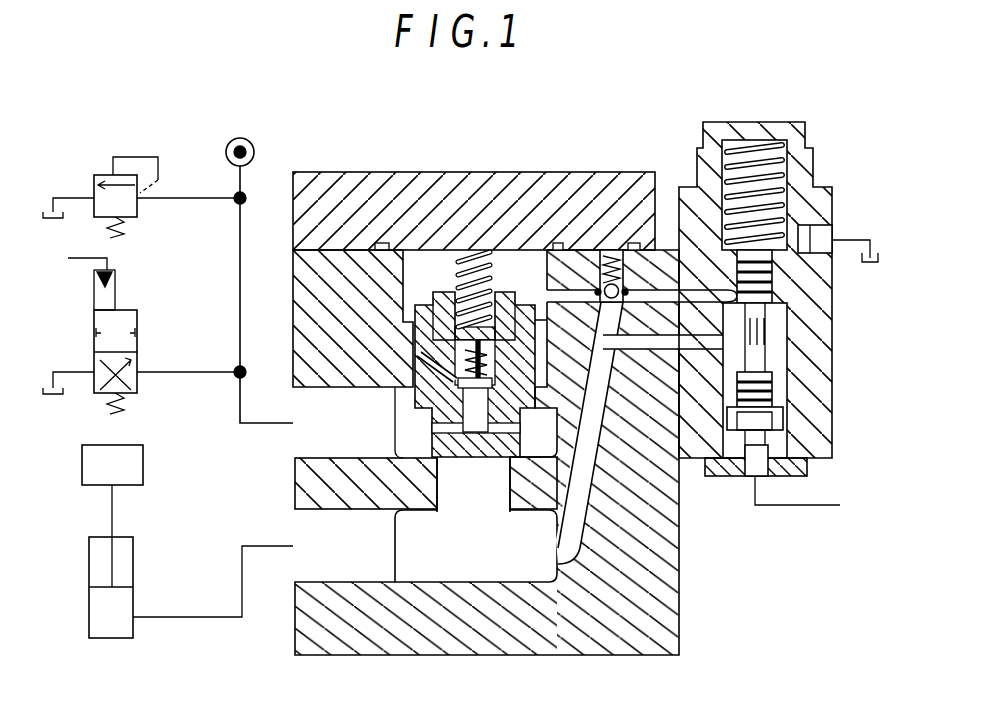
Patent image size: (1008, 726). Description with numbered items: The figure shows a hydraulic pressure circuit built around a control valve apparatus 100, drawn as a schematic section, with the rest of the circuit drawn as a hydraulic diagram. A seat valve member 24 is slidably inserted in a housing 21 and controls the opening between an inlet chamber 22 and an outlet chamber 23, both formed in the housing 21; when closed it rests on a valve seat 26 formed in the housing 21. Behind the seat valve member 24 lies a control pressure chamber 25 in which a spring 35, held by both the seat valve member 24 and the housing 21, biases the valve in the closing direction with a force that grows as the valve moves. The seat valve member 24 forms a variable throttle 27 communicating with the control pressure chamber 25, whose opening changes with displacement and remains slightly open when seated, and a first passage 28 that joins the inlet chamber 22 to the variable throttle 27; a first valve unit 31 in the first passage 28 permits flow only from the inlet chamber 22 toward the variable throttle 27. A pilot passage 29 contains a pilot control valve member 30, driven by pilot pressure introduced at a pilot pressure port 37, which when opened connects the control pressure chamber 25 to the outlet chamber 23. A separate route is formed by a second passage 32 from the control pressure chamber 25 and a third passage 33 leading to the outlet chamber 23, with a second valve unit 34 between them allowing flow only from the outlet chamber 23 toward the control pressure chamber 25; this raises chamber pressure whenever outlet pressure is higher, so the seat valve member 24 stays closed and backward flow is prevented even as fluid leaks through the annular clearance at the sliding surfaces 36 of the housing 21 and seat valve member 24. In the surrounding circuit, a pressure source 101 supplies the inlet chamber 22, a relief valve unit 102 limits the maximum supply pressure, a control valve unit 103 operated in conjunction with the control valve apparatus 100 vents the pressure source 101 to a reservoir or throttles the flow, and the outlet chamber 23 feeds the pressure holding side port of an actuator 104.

The control valve apparatus 100 is at (300, 658).
The pressure source 101 is at (254, 148).
The relief valve unit 102 is at (97, 178).
The control valve unit 103 is at (117, 311).
The actuator 104 is at (110, 639).
The housing 21 is at (374, 620).
The inlet chamber 22 is at (323, 433).
The outlet chamber 23 is at (347, 557).
The seat valve member 24 is at (465, 460).
The control pressure chamber 25 is at (425, 273).
The valve seat 26 is at (502, 460).
The variable throttle 27 is at (422, 330).
The first passage 28 is at (432, 422).
The pilot passage 29 is at (667, 293).
The pilot control valve member 30 is at (770, 312).
The first valve unit 31 is at (422, 391).
The second passage 32 is at (566, 252).
The third passage 33 is at (623, 430).
The second valve unit 34 is at (573, 293).
The spring 35 is at (472, 250).
The sliding surfaces 36 is at (425, 347).
The pilot pressure port 37 is at (753, 477).